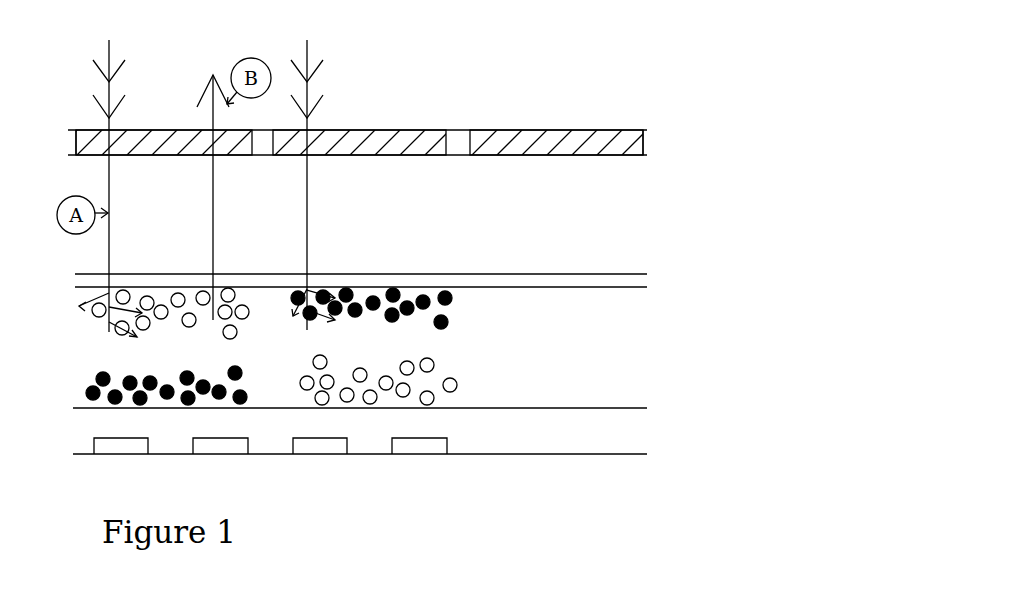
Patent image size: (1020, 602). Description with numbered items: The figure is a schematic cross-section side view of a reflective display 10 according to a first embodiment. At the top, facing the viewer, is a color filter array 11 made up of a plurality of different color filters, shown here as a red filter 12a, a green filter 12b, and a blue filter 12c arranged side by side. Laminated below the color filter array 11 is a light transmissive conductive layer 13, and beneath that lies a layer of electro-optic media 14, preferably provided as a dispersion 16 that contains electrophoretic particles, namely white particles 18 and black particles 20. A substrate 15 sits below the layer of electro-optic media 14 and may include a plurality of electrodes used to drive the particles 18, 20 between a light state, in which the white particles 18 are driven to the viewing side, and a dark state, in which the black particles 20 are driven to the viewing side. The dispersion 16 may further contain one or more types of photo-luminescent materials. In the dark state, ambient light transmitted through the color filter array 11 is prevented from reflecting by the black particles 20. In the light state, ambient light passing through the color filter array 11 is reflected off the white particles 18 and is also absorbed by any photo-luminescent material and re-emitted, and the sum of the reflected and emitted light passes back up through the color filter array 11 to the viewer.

The reflective display 10 is at (607, 73).
The color filter array 11 is at (364, 115).
The red filter 12a is at (92, 129).
The green filter 12b is at (382, 129).
The blue filter 12c is at (507, 129).
The light transmissive conductive layer 13 is at (602, 273).
The layer of electro-optic media 14 is at (632, 287).
The substrate 15 is at (630, 453).
The dispersion 16 is at (287, 359).
The white particles 18 is at (458, 378).
The black particles 20 is at (452, 297).